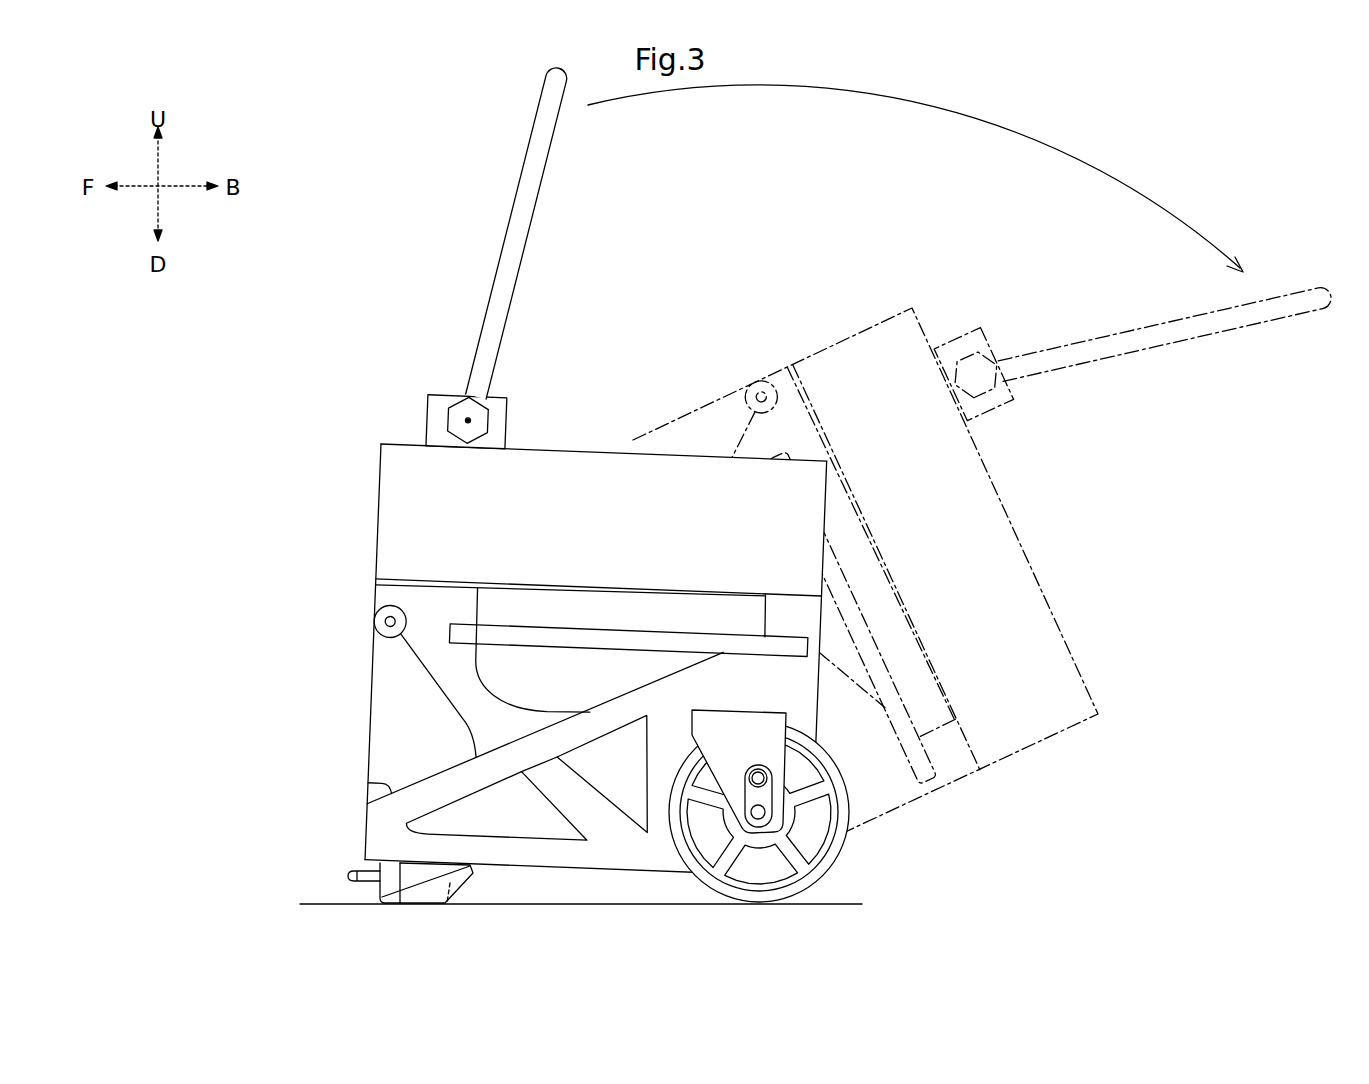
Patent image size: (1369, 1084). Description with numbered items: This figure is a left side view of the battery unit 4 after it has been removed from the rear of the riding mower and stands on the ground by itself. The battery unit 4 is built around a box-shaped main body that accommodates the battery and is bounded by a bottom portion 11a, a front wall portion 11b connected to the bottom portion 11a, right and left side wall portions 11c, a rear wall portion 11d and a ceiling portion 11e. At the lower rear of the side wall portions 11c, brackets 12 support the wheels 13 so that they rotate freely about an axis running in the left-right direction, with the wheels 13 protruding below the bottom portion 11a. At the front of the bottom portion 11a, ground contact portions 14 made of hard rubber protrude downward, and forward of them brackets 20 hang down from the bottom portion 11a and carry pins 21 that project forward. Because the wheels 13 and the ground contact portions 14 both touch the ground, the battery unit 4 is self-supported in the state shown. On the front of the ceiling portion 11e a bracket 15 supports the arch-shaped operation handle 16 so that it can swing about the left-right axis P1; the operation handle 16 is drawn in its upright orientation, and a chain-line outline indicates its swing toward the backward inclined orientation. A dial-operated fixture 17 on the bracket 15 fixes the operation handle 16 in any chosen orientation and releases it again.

The battery unit 4 is at (767, 288).
The bottom portion 11a is at (587, 873).
The front wall portion 11b is at (372, 680).
The side wall portions 11c is at (410, 743).
The rear wall portion 11d is at (817, 720).
The ceiling portion 11e is at (608, 445).
The brackets 12 is at (737, 755).
The wheels 13 is at (838, 858).
The ground contact portions 14 is at (427, 897).
The bracket 15 is at (447, 393).
The operation handle 16 is at (525, 168).
The dial-operated fixture 17 is at (497, 421).
The brackets 20 is at (388, 890).
The pins 21 is at (352, 877).
The axis P1 is at (466, 420).